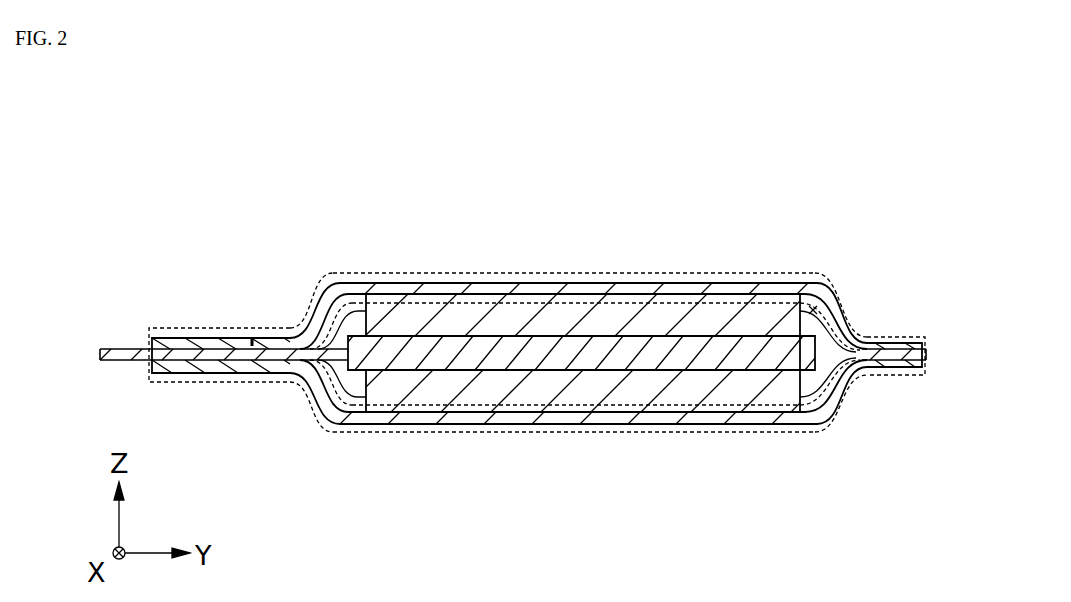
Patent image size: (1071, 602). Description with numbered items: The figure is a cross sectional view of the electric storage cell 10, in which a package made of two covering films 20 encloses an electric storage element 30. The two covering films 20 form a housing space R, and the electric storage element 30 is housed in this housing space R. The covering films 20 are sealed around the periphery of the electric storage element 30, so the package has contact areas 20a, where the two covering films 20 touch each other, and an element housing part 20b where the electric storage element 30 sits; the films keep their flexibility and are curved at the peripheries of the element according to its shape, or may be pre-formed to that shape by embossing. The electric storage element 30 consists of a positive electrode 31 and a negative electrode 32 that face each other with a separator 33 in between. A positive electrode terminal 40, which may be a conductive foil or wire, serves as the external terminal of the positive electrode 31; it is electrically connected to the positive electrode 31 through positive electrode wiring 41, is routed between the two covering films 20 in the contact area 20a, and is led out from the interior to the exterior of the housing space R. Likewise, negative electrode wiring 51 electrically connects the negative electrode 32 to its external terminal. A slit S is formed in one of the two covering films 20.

The electric storage cell 10 is at (881, 168).
The covering film 20 is at (723, 292).
The contact area 20a is at (205, 328).
The element housing part 20b is at (410, 273).
The electric storage element 30 is at (666, 229).
The positive electrode 31 is at (483, 317).
The negative electrode 32 is at (557, 388).
The separator 33 is at (635, 353).
The positive electrode terminal 40 is at (135, 348).
The positive electrode wiring 41 is at (337, 288).
The negative electrode wiring 51 is at (343, 405).
The housing space R is at (819, 284).
The slit S is at (252, 338).